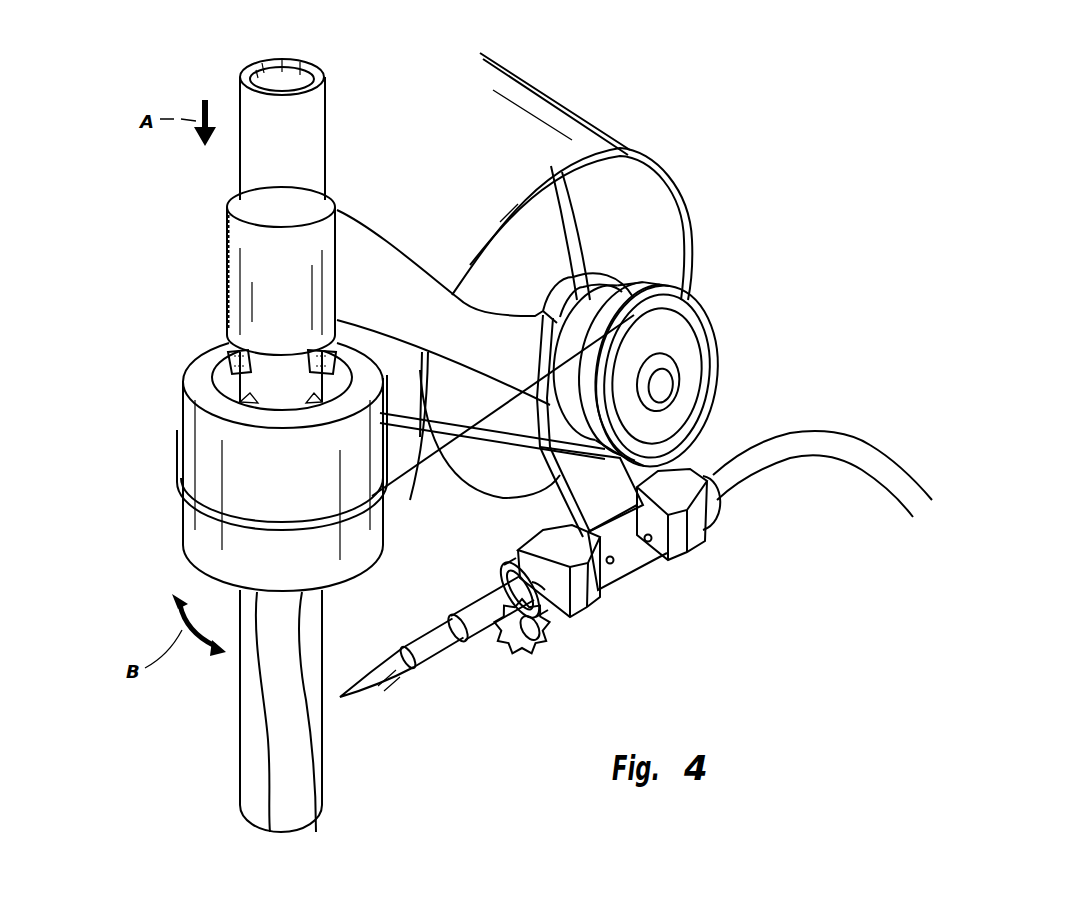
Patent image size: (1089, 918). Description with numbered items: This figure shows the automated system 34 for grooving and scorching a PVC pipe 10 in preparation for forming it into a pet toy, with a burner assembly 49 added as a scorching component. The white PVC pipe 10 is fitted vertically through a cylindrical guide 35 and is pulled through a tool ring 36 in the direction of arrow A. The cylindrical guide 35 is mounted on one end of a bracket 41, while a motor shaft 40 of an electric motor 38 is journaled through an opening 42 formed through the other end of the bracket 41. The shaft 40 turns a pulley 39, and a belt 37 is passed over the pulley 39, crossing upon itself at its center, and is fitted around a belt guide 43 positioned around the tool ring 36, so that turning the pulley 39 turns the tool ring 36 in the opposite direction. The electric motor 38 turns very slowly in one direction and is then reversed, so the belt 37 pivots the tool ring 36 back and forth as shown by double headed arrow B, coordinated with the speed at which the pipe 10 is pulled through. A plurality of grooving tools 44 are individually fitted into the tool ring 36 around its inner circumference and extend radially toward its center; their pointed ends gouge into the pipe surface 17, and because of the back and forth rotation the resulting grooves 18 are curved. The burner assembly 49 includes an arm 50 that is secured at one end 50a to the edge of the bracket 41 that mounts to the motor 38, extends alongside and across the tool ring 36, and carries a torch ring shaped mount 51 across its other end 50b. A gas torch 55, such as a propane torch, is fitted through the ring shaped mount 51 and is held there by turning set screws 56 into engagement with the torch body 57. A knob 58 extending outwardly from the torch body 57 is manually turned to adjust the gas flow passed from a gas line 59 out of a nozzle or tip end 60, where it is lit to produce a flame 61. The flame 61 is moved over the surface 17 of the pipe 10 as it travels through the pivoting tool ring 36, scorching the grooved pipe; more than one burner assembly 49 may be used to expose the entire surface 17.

The PVC pipe 10 is at (331, 129).
The pipe surface 17 is at (282, 445).
The grooves 18 is at (268, 773).
The system 34 is at (186, 256).
The cylindrical guide 35 is at (281, 271).
The tool ring 36 is at (283, 467).
The belt 37 is at (412, 484).
The electric motor 38 is at (551, 276).
The pulley 39 is at (693, 358).
The motor shaft 40 is at (551, 166).
The bracket 41 is at (445, 307).
The opening 42 is at (542, 183).
The belt guide 43 is at (205, 470).
The grooving tools 44 is at (220, 384).
The burner assembly 49 is at (758, 613).
The arm 50 is at (590, 467).
The arm end 50a is at (640, 503).
The plate edge 50b is at (600, 423).
The torch ring shaped mount 51 is at (630, 562).
The gas torch 55 is at (585, 646).
The set screws 56 is at (653, 538).
The torch body 57 is at (516, 582).
The knob 58 is at (537, 653).
The gas line 59 is at (797, 460).
The nozzle or tip end 60 is at (443, 654).
The flame 61 is at (400, 681).